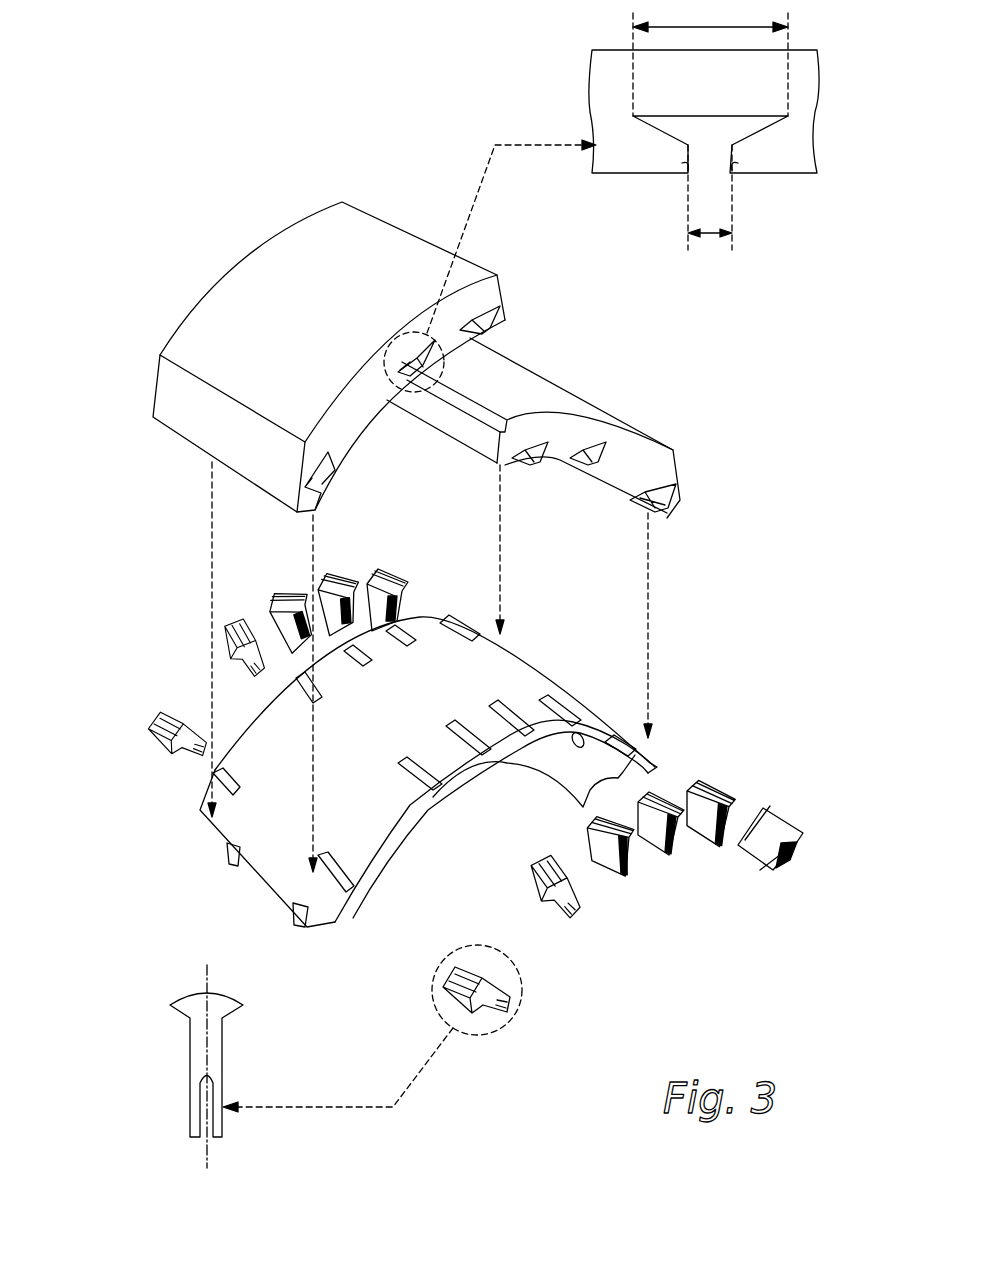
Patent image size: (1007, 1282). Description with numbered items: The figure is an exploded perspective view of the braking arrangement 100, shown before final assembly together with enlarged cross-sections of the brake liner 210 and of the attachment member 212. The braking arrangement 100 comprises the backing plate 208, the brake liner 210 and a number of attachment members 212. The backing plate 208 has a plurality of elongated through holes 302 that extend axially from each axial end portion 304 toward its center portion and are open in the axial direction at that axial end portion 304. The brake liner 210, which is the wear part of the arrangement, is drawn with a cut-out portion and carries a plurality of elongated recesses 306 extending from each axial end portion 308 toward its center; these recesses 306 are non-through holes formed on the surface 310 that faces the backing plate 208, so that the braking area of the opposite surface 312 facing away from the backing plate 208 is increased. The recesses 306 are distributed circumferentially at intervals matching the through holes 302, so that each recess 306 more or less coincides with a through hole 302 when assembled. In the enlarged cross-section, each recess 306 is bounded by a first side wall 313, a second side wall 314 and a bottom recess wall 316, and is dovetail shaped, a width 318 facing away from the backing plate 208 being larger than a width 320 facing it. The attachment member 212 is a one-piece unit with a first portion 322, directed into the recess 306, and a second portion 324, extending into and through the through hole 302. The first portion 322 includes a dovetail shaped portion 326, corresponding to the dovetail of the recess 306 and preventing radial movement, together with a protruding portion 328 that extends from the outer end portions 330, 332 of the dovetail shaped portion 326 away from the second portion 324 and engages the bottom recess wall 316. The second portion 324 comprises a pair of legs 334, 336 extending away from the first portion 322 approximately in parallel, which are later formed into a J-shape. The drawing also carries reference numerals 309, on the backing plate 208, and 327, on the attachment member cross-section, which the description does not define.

The braking arrangement 100 is at (175, 548).
The backing plate 208 is at (538, 683).
The brake liner 210 is at (180, 405).
The attachment member 212 is at (143, 973).
The through hole 302 is at (300, 675).
The axial end portion 304 is at (253, 715).
The recess 306 is at (710, 158).
The axial end portion 308 is at (237, 260).
The surface 309 is at (500, 667).
The surface 310 is at (612, 175).
The surface 312 is at (203, 338).
The first side wall 313 is at (687, 170).
The second side wall 314 is at (727, 167).
The bottom recess wall 316 is at (742, 116).
The width 318 is at (710, 58).
The width 320 is at (717, 240).
The first portion 322 is at (227, 1015).
The second portion 324 is at (222, 1058).
The dovetail shaped portion 326 is at (187, 1003).
The clip centerline 327 is at (210, 1157).
The protruding portion 328 is at (213, 990).
The outer end portion 330 is at (183, 1007).
The outer end portion 332 is at (240, 1005).
The leg 334 is at (190, 1132).
The leg 336 is at (223, 1132).